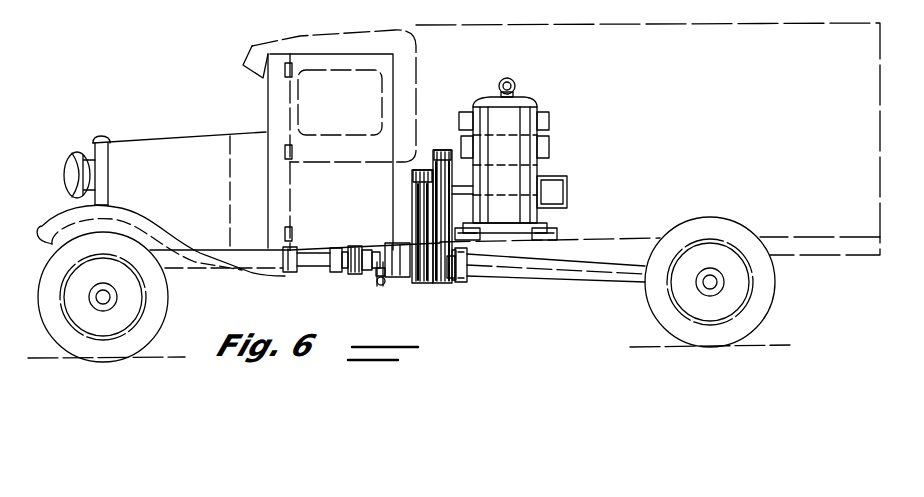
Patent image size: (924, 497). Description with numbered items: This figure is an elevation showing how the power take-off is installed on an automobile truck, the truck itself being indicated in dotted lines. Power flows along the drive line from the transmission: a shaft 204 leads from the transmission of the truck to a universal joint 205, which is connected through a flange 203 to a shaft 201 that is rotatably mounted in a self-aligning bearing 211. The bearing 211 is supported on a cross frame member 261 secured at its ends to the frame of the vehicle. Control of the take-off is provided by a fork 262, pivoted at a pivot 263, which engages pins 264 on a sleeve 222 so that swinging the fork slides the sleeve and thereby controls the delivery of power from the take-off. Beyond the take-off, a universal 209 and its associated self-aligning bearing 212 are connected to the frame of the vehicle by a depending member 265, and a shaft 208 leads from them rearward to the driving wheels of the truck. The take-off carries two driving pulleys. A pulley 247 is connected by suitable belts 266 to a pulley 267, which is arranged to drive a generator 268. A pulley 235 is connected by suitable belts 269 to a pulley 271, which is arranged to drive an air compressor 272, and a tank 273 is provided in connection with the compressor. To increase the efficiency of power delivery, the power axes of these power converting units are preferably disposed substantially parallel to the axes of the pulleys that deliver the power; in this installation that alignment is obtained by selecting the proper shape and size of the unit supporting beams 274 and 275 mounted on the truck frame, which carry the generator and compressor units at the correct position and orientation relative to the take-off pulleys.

The shaft 201 is at (355, 248).
The flange 203 is at (345, 251).
The shaft 204 is at (308, 269).
The universal joint 205 is at (336, 273).
The shaft 208 is at (608, 277).
The universal 209 is at (468, 251).
The self-aligning bearing 211 is at (365, 250).
The self-aligning bearing 212 is at (455, 279).
The sleeve 222 is at (396, 250).
The pulley 235 is at (444, 285).
The pulley 247 is at (420, 285).
The cross frame member 261 is at (360, 273).
The fork 262 is at (384, 284).
The pivot 263 is at (378, 286).
The pins 264 is at (386, 274).
The depending member 265 is at (456, 272).
The belts 266 is at (423, 212).
The pulley 267 is at (416, 178).
The generator 268 is at (567, 189).
The belts 269 is at (450, 152).
The pulley 271 is at (444, 150).
The air compressor 272 is at (545, 123).
The tank 273 is at (520, 103).
The unit supporting beam 274 is at (505, 232).
The unit supporting beam 275 is at (557, 233).